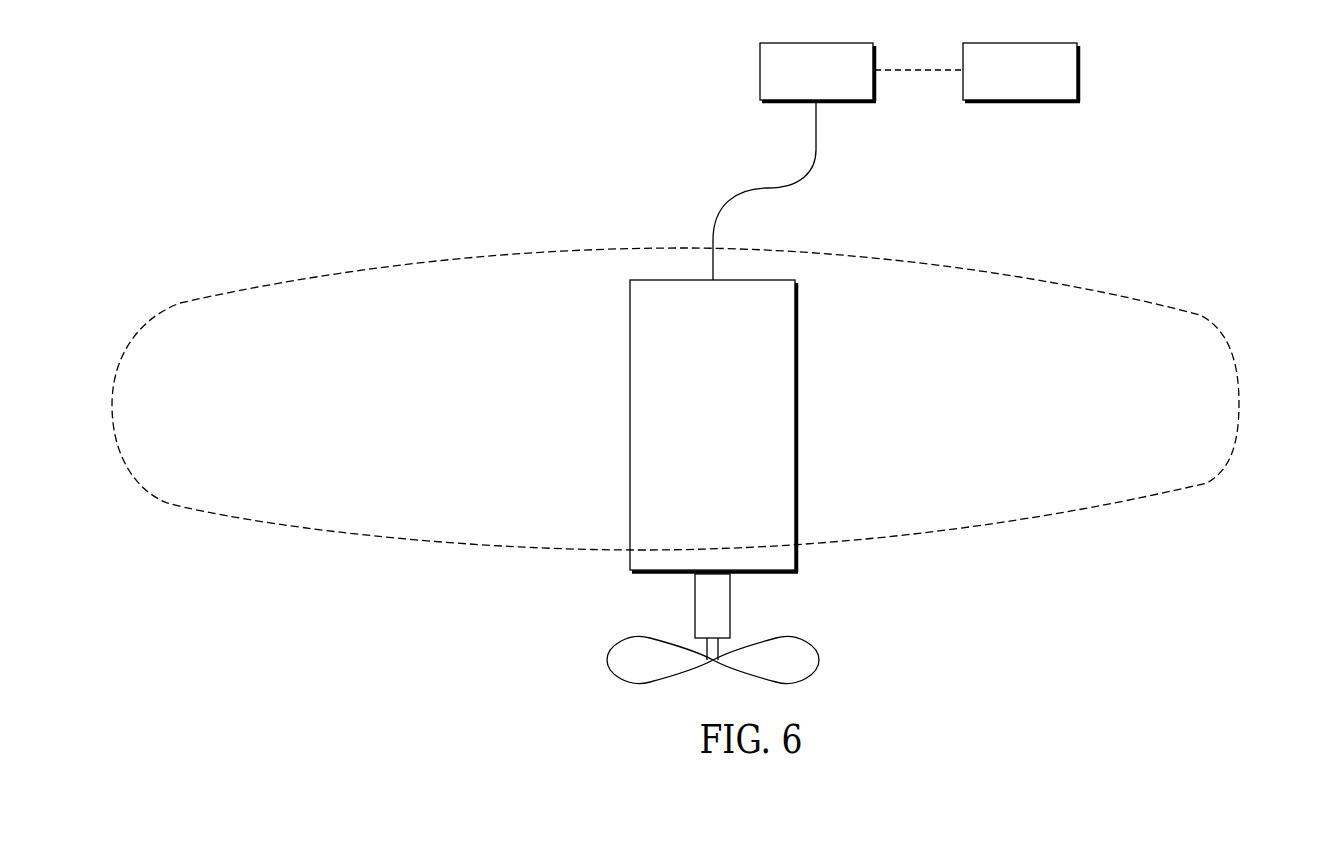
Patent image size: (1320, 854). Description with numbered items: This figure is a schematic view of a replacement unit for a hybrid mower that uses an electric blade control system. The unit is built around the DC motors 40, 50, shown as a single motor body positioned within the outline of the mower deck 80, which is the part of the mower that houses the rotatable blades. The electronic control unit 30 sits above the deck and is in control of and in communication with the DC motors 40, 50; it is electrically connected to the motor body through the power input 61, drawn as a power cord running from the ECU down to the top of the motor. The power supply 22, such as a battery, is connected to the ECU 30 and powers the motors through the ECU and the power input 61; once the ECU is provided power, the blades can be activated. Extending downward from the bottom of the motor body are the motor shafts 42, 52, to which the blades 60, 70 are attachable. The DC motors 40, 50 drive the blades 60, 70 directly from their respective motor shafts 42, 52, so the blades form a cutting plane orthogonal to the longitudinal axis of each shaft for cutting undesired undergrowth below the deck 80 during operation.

The power supply 22 is at (1007, 83).
The electronic control unit 30 is at (804, 83).
The power input 61 is at (816, 158).
The DC motor 40 is at (673, 426).
The DC motor 50 is at (630, 424).
The motor shaft 42 is at (671, 617).
The motor shaft 52 is at (695, 610).
The rotatable blade 60 is at (753, 660).
The rotatable blade 70 is at (820, 652).
The mower deck 80 is at (1241, 400).